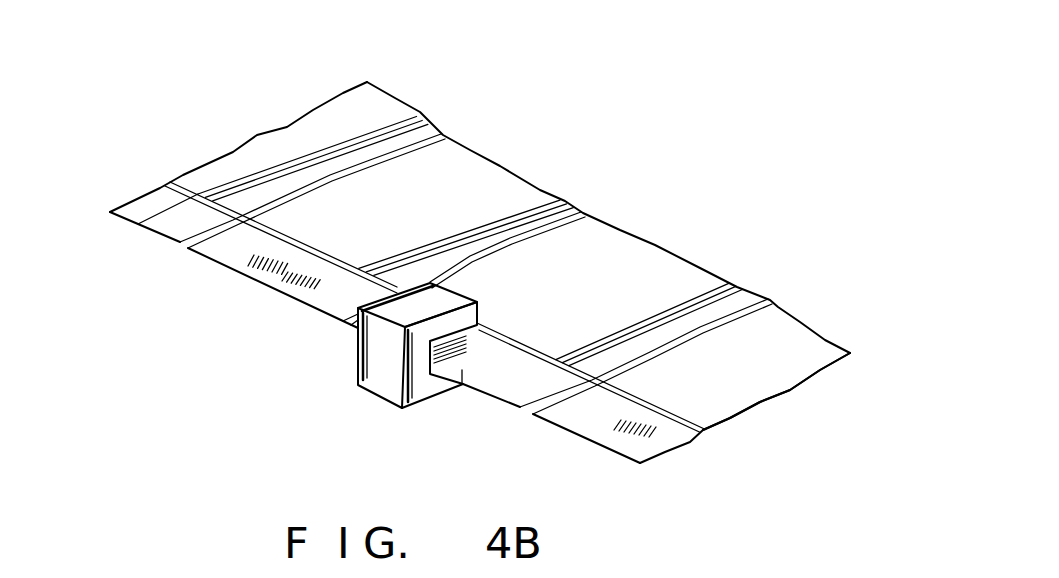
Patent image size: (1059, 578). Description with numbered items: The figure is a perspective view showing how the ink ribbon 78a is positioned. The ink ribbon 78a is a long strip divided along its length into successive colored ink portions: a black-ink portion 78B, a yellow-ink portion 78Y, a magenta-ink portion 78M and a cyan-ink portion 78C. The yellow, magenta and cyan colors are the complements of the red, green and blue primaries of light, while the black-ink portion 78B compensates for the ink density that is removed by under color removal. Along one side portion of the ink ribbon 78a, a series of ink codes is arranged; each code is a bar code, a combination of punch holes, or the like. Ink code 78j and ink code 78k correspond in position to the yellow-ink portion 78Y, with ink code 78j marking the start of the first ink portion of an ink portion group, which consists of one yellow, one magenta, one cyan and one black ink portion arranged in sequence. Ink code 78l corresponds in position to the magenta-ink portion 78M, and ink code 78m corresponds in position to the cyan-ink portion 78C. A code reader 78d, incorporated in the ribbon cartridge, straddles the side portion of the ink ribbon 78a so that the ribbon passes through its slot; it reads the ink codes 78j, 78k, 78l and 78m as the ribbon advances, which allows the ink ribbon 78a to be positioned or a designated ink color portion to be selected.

The ink ribbon 78a is at (476, 151).
The black-ink portion 78B is at (387, 104).
The yellow-ink portion 78Y is at (513, 199).
The magenta-ink portion 78M is at (653, 267).
The cyan-ink portion 78C is at (782, 323).
The ink code 78j is at (255, 272).
The ink code 78k is at (306, 288).
The ink code 78l is at (487, 351).
The ink code 78m is at (622, 436).
The code reader 78d is at (381, 366).